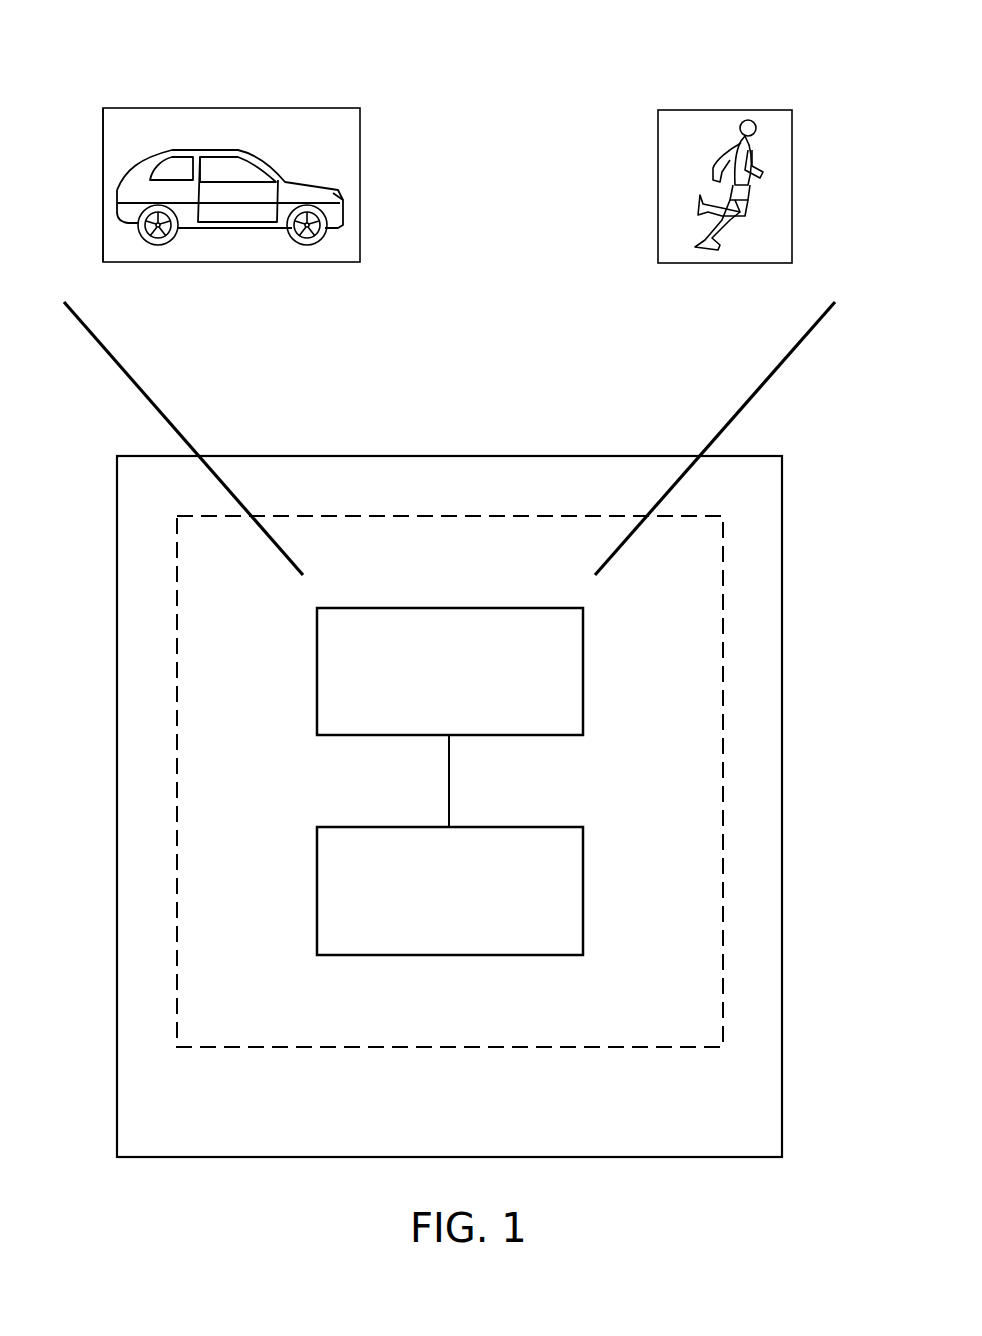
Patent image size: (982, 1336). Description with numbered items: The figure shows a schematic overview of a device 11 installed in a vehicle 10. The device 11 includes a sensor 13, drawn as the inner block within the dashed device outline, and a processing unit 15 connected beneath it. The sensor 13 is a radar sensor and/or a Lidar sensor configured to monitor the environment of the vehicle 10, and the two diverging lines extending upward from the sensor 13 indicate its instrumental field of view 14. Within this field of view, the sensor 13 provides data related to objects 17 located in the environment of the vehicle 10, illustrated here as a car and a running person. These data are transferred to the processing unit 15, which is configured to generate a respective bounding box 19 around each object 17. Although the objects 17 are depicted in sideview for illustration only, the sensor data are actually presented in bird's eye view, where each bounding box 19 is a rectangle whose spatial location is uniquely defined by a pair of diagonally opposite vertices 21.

The vehicle 10 is at (782, 1002).
The device 11 is at (568, 1047).
The sensor 13 is at (567, 669).
The instrumental field of view 14 is at (97, 339).
The processing unit 15 is at (567, 888).
The object 17 is at (262, 148).
The bounding box 19 is at (160, 110).
The vertex 21 is at (98, 106).